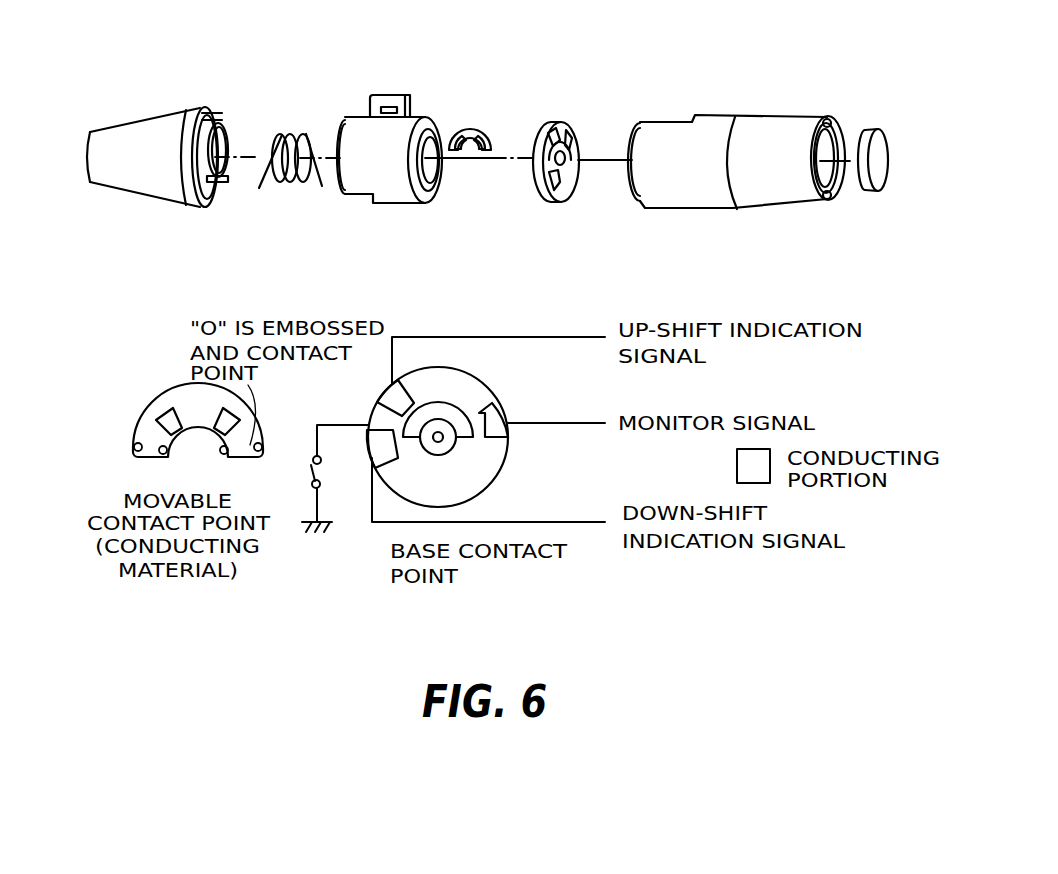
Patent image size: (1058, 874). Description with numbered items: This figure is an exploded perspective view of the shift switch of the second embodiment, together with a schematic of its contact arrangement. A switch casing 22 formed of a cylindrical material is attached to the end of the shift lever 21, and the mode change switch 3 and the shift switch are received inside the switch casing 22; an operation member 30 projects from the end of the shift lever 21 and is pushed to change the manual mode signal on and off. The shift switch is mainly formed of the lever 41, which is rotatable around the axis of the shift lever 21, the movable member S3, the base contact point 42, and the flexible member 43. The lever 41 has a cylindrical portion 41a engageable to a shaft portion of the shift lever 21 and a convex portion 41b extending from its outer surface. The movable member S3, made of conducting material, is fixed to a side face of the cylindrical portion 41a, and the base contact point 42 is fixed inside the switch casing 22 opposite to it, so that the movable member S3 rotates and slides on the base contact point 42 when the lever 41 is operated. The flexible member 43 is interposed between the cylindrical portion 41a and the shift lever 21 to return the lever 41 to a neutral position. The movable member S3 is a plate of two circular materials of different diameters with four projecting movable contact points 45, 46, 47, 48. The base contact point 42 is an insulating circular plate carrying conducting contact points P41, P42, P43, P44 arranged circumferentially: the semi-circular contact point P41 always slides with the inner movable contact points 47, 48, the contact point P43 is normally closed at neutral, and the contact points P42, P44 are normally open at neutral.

The shift lever 21 is at (133, 180).
The switch casing 22 is at (720, 124).
The operation member 30 is at (878, 148).
The lever 41 is at (377, 132).
The cylindrical portion 41a is at (373, 178).
The convex portion 41b is at (372, 100).
The base contact point 42 is at (551, 122).
The flexible member 43 is at (284, 132).
The movable member S3 is at (471, 117).
The movable contact point 45 is at (135, 442).
The movable contact point 46 is at (262, 448).
The movable contact point 47 is at (160, 455).
The movable contact point 48 is at (220, 457).
The mode change switch 3 is at (309, 474).
The contact point P41 is at (443, 401).
The contact point P42 is at (398, 387).
The contact point P43 is at (509, 440).
The contact point P44 is at (378, 452).